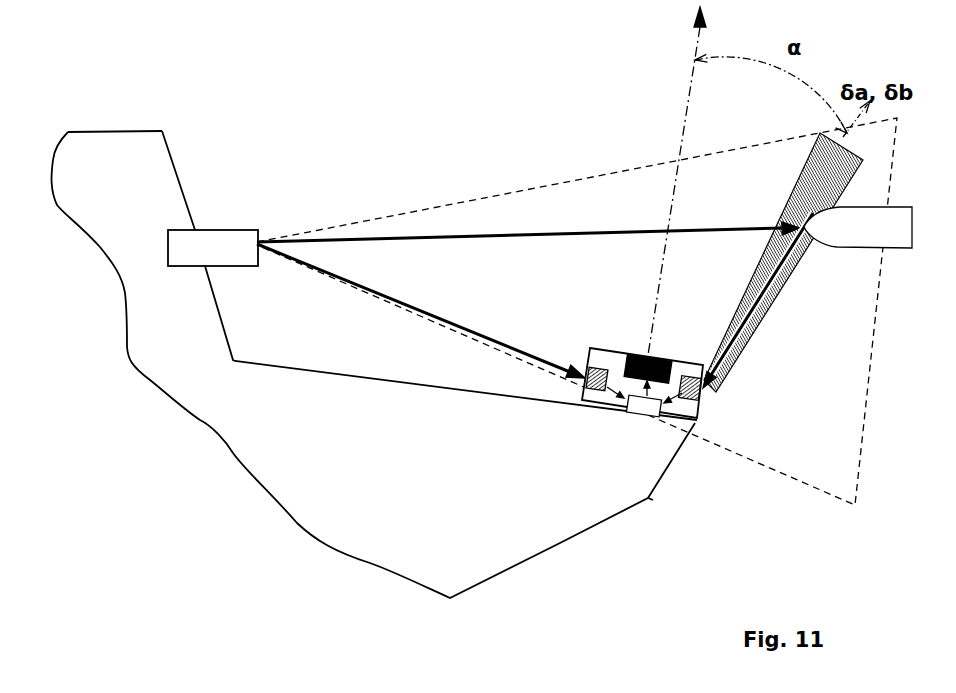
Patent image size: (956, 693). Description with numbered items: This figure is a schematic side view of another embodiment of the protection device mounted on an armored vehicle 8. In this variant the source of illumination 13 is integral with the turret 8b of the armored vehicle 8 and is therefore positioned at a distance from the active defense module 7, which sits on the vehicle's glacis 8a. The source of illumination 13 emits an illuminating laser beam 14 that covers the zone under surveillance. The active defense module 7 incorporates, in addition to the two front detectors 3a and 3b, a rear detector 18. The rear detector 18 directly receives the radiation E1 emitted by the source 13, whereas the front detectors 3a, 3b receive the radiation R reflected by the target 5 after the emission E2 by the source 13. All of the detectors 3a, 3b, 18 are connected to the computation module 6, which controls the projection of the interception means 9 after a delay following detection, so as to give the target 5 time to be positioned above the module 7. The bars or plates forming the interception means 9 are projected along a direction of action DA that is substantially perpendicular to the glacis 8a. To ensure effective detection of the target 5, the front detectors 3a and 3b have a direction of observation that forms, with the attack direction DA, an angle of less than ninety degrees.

The front detector 3a is at (762, 409).
The front detector 3b is at (700, 396).
The target 5 is at (900, 227).
The computation module 6 is at (650, 417).
The active defense module 7 is at (612, 418).
The armored vehicle 8 is at (478, 527).
The glacis 8a is at (388, 382).
The turret 8b is at (126, 167).
The interception means 9 is at (647, 355).
The source of illumination 13 is at (230, 242).
The illuminating laser beam 14 is at (443, 202).
The rear detector 18 is at (587, 385).
The radiation emitted by the source E1 is at (421, 311).
The emission by the source E2 is at (528, 224).
The reflected radiation R is at (783, 262).
The direction of action DA is at (673, 181).